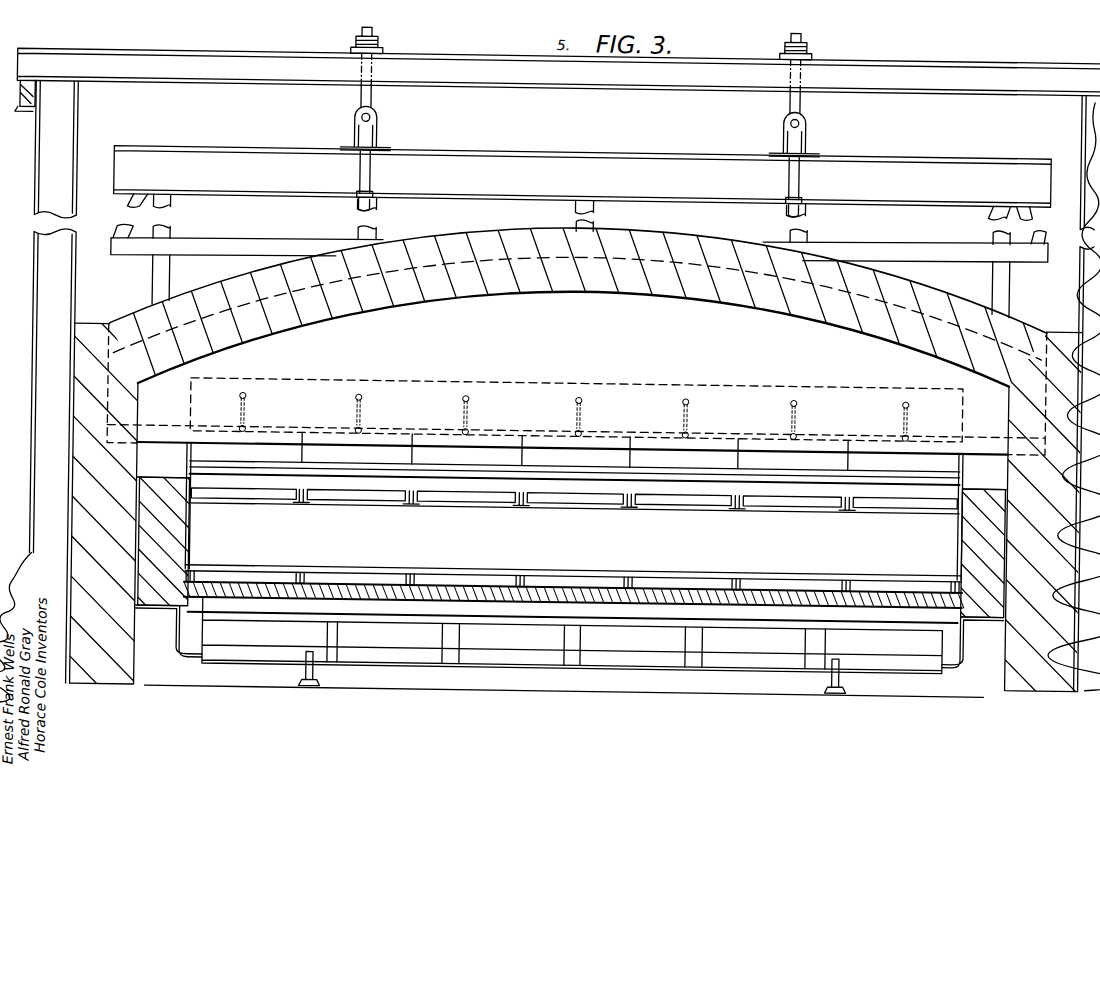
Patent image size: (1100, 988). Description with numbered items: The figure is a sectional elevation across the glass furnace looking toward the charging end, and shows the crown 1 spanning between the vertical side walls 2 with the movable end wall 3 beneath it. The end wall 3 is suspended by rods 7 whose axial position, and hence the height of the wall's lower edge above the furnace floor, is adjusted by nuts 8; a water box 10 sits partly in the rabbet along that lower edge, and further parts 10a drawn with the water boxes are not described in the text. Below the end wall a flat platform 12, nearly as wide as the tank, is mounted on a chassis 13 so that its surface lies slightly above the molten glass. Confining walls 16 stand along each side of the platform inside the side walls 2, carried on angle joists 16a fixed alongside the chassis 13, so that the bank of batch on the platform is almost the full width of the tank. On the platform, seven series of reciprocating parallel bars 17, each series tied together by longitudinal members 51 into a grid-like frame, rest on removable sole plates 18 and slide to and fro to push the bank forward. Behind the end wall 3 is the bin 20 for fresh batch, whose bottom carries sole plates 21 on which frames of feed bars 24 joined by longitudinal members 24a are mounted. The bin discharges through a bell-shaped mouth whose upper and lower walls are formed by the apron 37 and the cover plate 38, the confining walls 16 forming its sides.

The crown 1 is at (555, 289).
The vertical side walls 2 is at (88, 542).
The movable end wall 3 is at (573, 398).
The rods 7 is at (367, 100).
The nuts 8 is at (355, 41).
The water box 10 is at (265, 457).
The anchor bolt 10a is at (355, 395).
The flat platform 12 is at (543, 585).
The chassis 13 is at (395, 659).
The confining walls 16 is at (178, 513).
The angle joists 16a is at (160, 617).
The parallel bars 17 is at (387, 582).
The sole plate 18 is at (800, 587).
The bin 20 is at (403, 377).
The sole plates 21 is at (800, 470).
The feed bars 24 is at (258, 502).
The longitudinal members 24a is at (308, 507).
The apron 37 is at (571, 511).
The cover plate 38 is at (733, 472).
The longitudinal members 51 is at (191, 583).